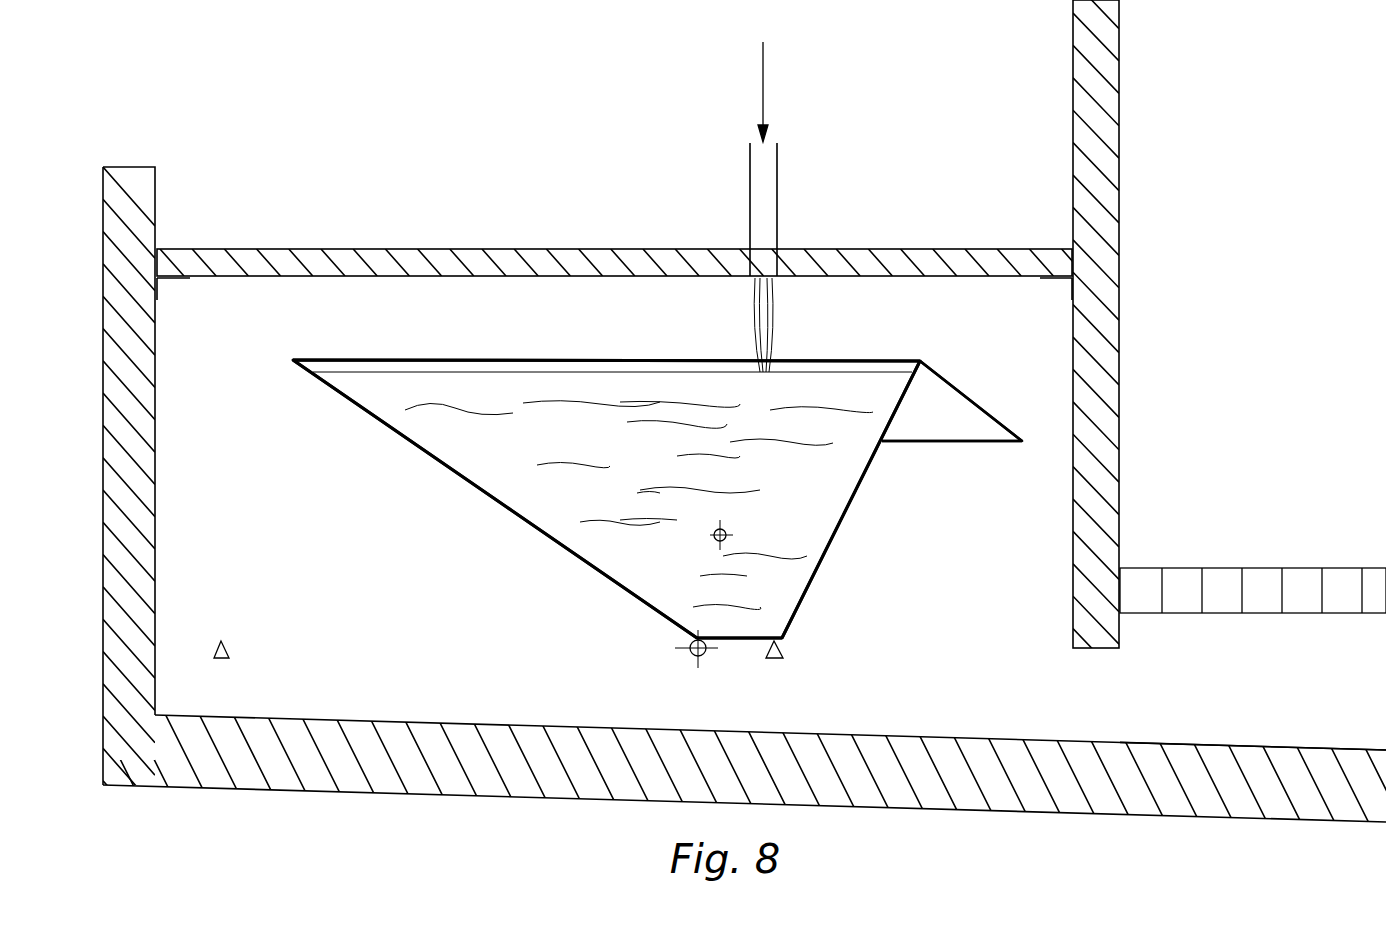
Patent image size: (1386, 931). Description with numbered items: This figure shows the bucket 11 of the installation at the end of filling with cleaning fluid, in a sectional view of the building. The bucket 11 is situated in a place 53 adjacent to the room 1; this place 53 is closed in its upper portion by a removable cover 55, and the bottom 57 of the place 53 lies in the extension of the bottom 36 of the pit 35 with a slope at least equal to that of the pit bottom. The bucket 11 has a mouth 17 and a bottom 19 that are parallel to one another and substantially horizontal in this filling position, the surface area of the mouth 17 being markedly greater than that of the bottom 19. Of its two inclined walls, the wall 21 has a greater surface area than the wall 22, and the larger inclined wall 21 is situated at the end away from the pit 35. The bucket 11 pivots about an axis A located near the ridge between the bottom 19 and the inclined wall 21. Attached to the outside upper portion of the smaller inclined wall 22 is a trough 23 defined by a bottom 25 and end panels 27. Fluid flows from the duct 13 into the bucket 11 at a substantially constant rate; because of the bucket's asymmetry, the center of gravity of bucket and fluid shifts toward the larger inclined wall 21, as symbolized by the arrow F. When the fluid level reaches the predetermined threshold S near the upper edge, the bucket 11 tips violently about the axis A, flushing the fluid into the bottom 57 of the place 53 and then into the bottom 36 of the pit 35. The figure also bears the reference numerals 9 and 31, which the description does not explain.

The room 1 is at (1277, 357).
The wall 9 is at (1120, 335).
The bucket 11 is at (635, 501).
The duct 13 is at (750, 180).
The mouth 17 is at (352, 358).
The bottom 19 is at (737, 642).
The inclined wall 21 is at (490, 500).
The inclined wall 22 is at (830, 545).
The trough 23 is at (951, 440).
The bottom 25 is at (905, 445).
The end panel 27 is at (945, 395).
The grating 31 is at (1222, 568).
The pit 35 is at (1269, 666).
The bottom 36 is at (1312, 740).
The place 53 is at (218, 310).
The removable cover 55 is at (350, 248).
The bottom 57 is at (320, 715).
The axis A is at (690, 655).
The arrow F is at (652, 566).
The threshold S is at (850, 372).